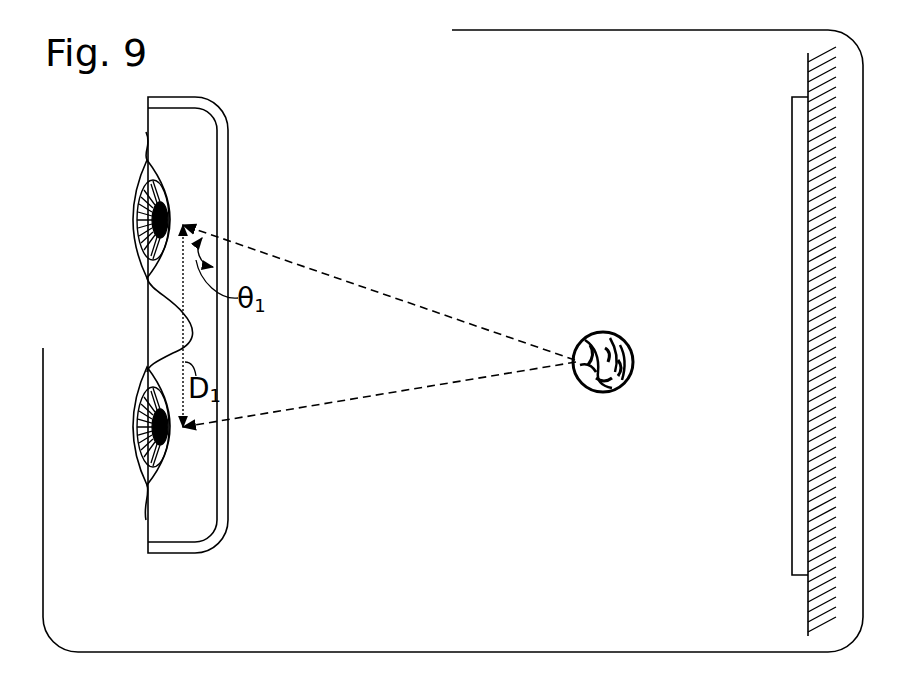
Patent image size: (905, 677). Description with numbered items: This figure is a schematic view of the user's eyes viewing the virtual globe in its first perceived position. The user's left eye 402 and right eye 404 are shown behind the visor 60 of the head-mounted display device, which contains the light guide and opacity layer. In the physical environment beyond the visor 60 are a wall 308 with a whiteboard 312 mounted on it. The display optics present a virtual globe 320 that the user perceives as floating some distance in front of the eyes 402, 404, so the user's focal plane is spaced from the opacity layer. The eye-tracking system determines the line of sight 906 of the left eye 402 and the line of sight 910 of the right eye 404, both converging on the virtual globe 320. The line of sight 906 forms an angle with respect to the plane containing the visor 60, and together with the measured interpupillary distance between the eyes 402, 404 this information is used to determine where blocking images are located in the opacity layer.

The visor 60 is at (212, 110).
The wall 308 is at (808, 637).
The whiteboard 312 is at (792, 490).
The virtual globe 320 is at (601, 393).
The left eye 402 is at (103, 205).
The right eye 404 is at (103, 411).
The line of sight 906 is at (300, 265).
The line of sight 910 is at (306, 410).